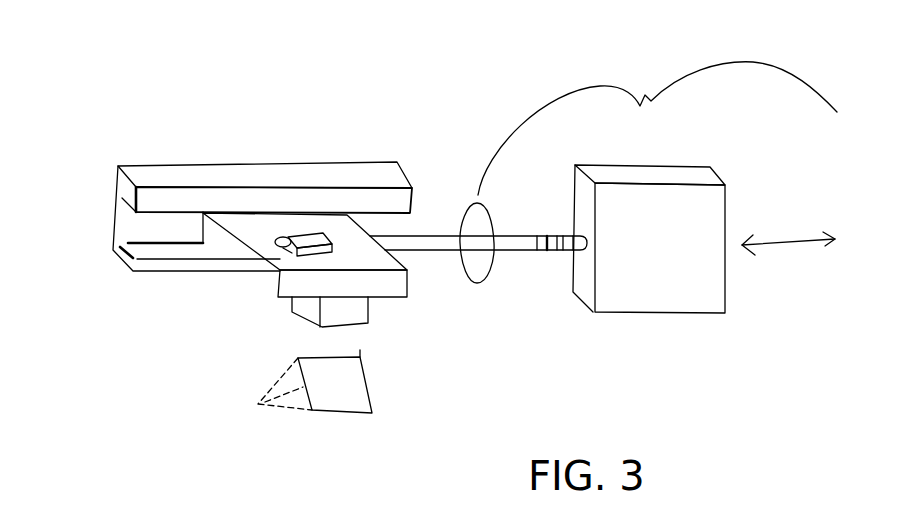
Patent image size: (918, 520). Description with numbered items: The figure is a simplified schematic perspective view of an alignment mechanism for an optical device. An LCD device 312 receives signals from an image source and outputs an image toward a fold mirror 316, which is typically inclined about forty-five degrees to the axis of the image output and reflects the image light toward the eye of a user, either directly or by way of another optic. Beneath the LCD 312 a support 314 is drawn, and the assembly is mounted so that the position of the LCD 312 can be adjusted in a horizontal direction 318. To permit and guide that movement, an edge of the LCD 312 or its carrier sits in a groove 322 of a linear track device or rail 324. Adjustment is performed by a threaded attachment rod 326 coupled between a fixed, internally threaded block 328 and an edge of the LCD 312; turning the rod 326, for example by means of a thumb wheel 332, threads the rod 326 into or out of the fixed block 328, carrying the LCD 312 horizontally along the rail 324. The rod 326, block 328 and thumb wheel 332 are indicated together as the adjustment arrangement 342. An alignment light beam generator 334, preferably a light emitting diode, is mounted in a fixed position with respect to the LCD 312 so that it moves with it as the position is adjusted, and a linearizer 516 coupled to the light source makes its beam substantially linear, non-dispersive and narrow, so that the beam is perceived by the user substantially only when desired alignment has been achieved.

The LCD device 312 is at (390, 290).
The support block 314 is at (352, 315).
The fold mirror 316 is at (340, 398).
The horizontal direction 318 is at (795, 238).
The groove 322 is at (145, 231).
The rail 324 is at (196, 181).
The threaded attachment rod 326 is at (553, 240).
The fixed internally threaded block 328 is at (667, 178).
The thumb wheel 332 is at (487, 283).
The alignment light beam generator 334 is at (279, 241).
The drive assembly 342 is at (657, 117).
The linearizer 516 is at (290, 248).